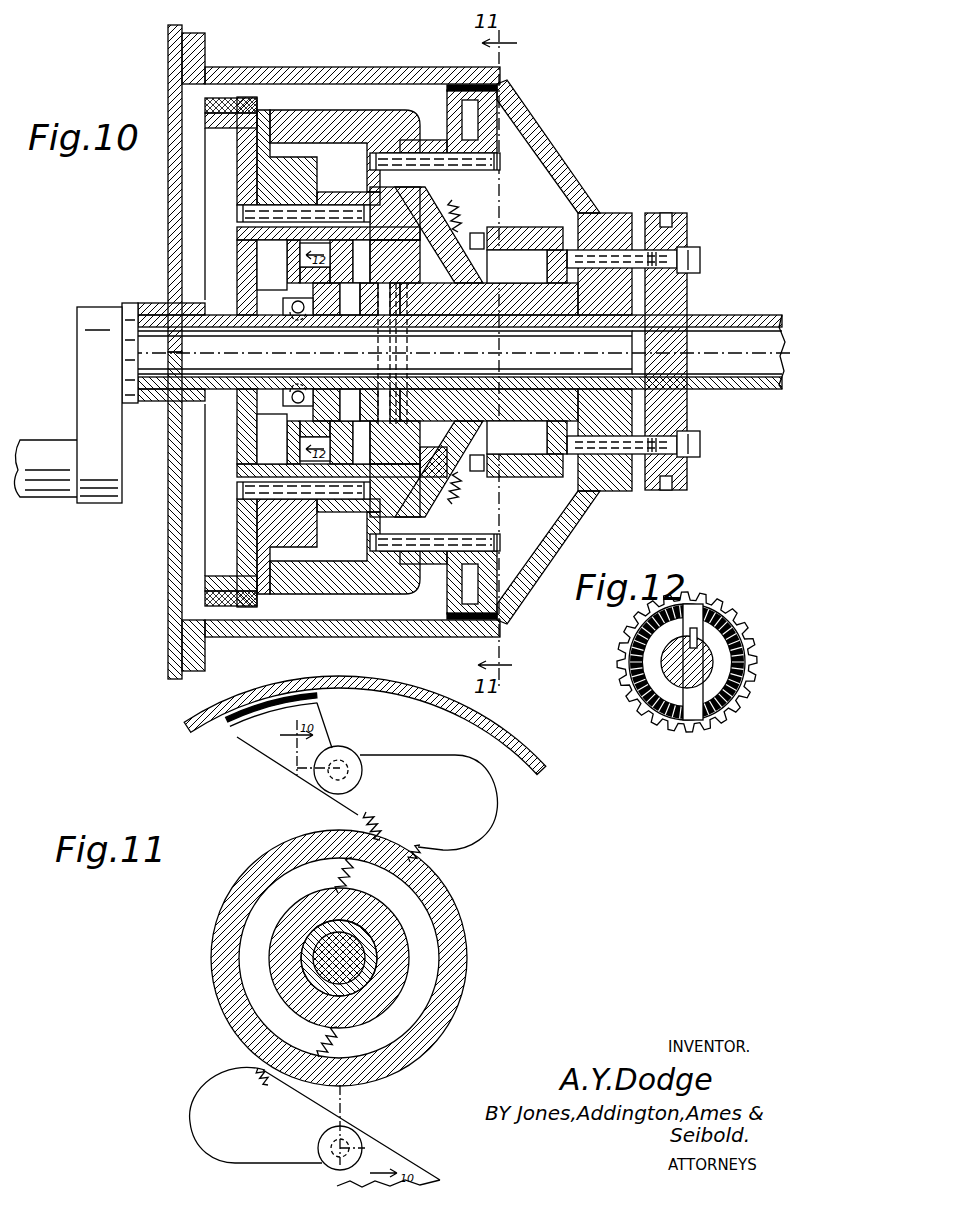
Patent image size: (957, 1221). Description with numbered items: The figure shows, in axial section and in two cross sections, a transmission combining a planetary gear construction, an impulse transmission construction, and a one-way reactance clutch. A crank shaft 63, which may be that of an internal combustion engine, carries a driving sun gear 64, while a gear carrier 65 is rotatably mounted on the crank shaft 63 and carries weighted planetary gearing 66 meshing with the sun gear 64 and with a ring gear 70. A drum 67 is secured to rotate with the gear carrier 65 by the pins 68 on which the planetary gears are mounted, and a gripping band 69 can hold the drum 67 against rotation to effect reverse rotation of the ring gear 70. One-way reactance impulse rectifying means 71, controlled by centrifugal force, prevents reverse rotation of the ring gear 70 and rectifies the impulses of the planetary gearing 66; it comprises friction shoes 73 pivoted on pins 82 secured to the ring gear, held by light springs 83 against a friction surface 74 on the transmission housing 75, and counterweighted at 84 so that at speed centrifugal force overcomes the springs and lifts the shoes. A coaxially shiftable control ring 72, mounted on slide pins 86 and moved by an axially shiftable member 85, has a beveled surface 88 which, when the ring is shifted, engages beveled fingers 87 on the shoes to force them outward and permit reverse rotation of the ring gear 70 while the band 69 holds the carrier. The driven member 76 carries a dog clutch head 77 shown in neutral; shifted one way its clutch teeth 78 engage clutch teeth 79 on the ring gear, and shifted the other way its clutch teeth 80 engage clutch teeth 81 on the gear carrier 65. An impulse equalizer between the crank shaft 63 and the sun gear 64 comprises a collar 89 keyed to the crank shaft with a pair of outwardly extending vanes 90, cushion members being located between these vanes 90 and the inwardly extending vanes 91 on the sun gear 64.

In FIG. 10, the crank shaft 63 is at (162, 330).
In FIG. 11, the crank shaft 63 is at (336, 960).
In FIG. 12, the crank shaft 63 is at (720, 700).
In FIG. 10, the driving sun gear 64 is at (283, 396).
In FIG. 12, the driving sun gear 64 is at (630, 636).
In FIG. 10, the gear carrier 65 is at (338, 194).
In FIG. 10, the planetary gearing 66 is at (280, 172).
In FIG. 10, the drum 67 is at (250, 125).
In FIG. 10, the pins 68 is at (250, 218).
In FIG. 10, the gripping band 69 is at (236, 104).
In FIG. 10, the ring gear 70 is at (335, 125).
In FIG. 10, the one-way reactance impulse rectifying means 71 is at (480, 110).
In FIG. 10, the control ring 72 is at (500, 233).
In FIG. 11, the control ring 72 is at (445, 895).
In FIG. 10, the friction shoes 73 is at (500, 86).
In FIG. 11, the friction shoes 73 is at (262, 725).
In FIG. 10, the friction surface 74 is at (465, 72).
In FIG. 11, the friction surface 74 is at (395, 700).
In FIG. 10, the transmission housing 75 is at (545, 150).
In FIG. 10, the driven member 76 is at (720, 318).
In FIG. 11, the driven member 76 is at (342, 968).
In FIG. 10, the dog clutch head 77 is at (418, 366).
In FIG. 10, the clutch teeth 78 is at (470, 440).
In FIG. 10, the clutch teeth 79 is at (510, 458).
In FIG. 10, the clutch teeth 80 is at (402, 458).
In FIG. 10, the clutch teeth 81 is at (409, 366).
In FIG. 10, the pins 82 is at (498, 165).
In FIG. 11, the pins 82 is at (348, 765).
In FIG. 10, the light springs 83 is at (452, 222).
In FIG. 11, the light springs 83 is at (360, 818).
In FIG. 11, the counterweights 84 is at (497, 808).
In FIG. 10, the axially shiftable member 85 is at (672, 240).
In FIG. 10, the slide pins 86 is at (610, 262).
In FIG. 10, the fingers 87 is at (470, 205).
In FIG. 11, the fingers 87 is at (425, 850).
In FIG. 10, the beveled surface 88 is at (517, 266).
In FIG. 10, the collar 89 is at (283, 312).
In FIG. 12, the collar 89 is at (668, 700).
In FIG. 10, the vanes 90 is at (283, 300).
In FIG. 12, the vanes 90 is at (700, 607).
In FIG. 12, the vanes 91 is at (740, 640).